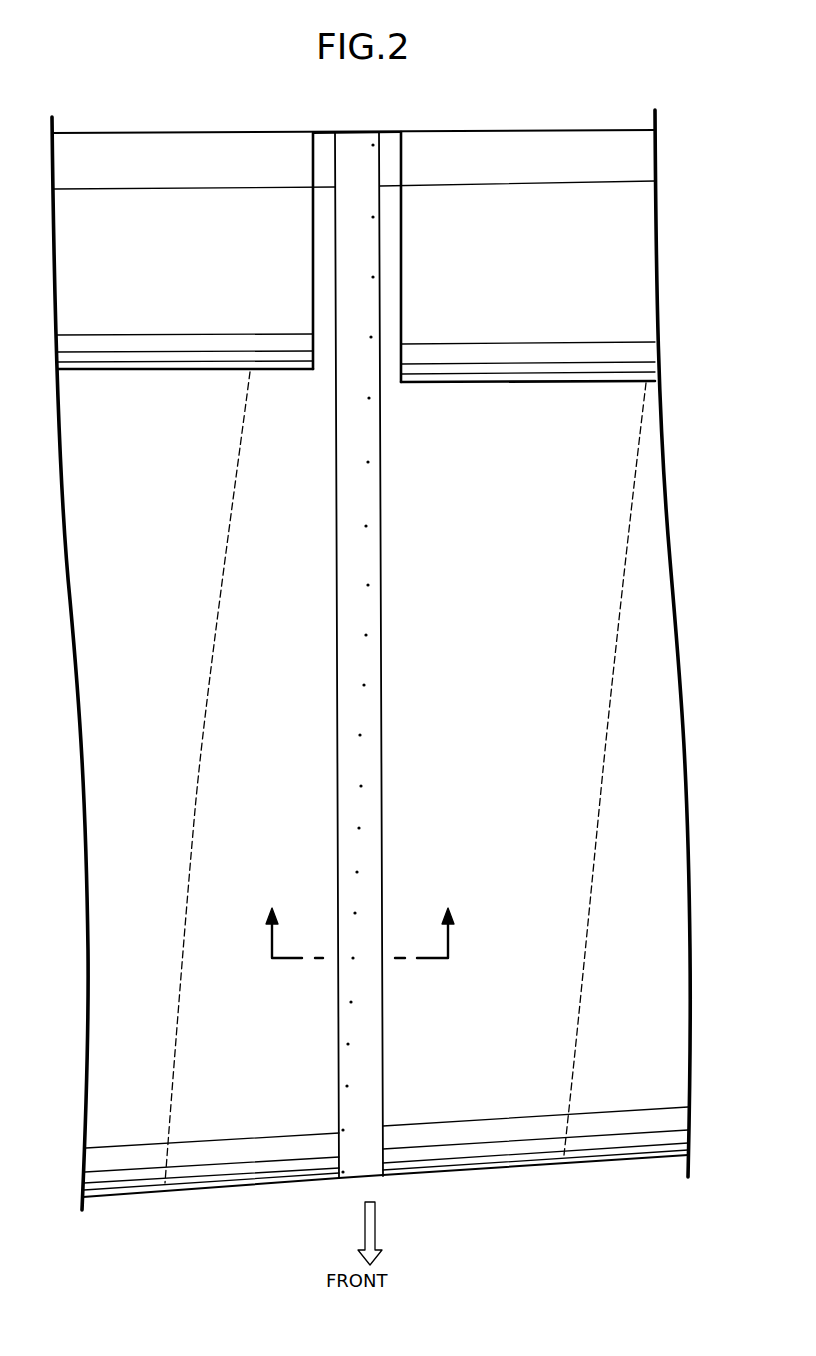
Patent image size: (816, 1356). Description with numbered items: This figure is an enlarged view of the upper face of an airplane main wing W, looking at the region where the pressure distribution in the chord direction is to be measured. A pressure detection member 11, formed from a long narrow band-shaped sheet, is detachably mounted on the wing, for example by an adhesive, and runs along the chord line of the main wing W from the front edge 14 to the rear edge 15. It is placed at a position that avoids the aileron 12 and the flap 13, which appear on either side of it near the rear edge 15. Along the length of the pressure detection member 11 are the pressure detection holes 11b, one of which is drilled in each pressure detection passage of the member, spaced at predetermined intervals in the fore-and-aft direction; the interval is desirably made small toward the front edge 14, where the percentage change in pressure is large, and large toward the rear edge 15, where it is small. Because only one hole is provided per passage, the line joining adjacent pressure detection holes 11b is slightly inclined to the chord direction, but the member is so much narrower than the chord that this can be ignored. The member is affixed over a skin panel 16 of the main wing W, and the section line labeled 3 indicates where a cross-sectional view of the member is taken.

The pressure detection member 11 is at (383, 729).
The pressure detection hole 11b is at (371, 337).
The aileron 12 is at (570, 143).
The flap 13 is at (192, 160).
The front edge 14 is at (527, 1165).
The rear edge 15 is at (343, 130).
The skin panel 16 is at (265, 836).
The airplane main wing W is at (672, 486).
The section line 3- 3 is at (359, 957).